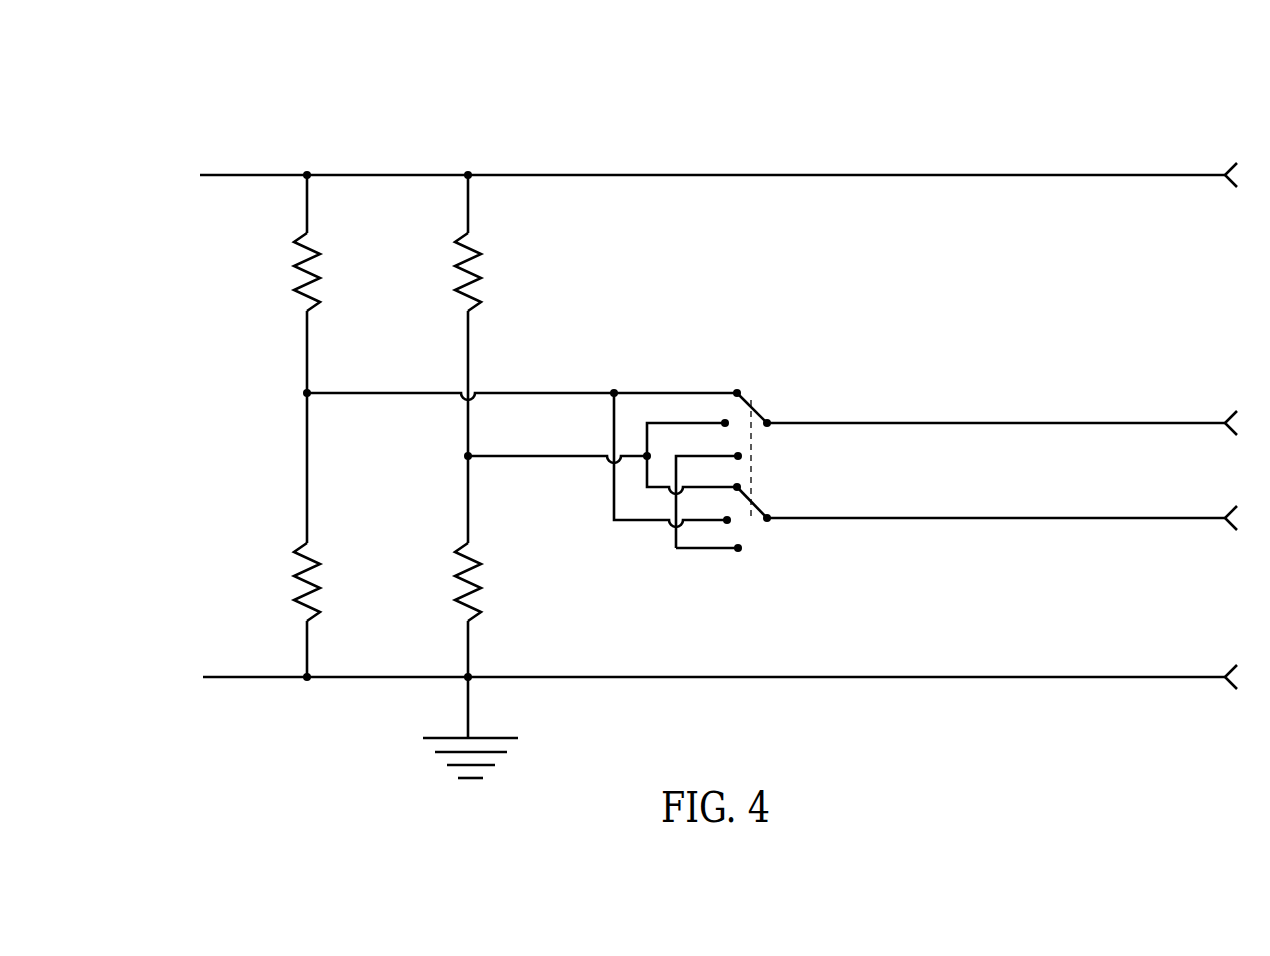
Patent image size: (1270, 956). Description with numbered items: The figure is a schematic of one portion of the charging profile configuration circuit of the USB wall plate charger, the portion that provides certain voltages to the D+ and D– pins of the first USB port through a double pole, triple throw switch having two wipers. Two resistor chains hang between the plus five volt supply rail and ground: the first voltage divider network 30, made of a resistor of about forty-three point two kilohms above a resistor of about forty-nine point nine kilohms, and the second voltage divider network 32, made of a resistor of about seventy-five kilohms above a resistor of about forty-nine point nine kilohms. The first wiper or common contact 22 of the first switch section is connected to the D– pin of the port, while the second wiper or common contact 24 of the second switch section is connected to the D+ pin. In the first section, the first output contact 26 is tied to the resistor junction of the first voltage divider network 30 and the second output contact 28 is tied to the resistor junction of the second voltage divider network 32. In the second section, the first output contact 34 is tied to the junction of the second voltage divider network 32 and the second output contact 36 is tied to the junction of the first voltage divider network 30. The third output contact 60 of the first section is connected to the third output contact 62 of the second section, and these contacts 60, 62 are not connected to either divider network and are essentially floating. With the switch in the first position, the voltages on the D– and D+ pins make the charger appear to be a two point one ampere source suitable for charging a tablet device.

The first voltage divider network 30 is at (254, 129).
The second voltage divider network 32 is at (561, 233).
The first output contact of the first section of switch SW1 26 is at (737, 392).
The second output contact of the first section of switch SW1 28 is at (725, 421).
The first wiper or common contact 22 is at (769, 422).
The third output contact of the first section of switch SW1 60 is at (741, 455).
The first output contact of the second section of switch SW1 34 is at (740, 486).
The second wiper or common contact 24 is at (768, 516).
The second output contact of the second section of switch SW1 36 is at (730, 522).
The third output contact of the second section of switch SW1 62 is at (738, 552).